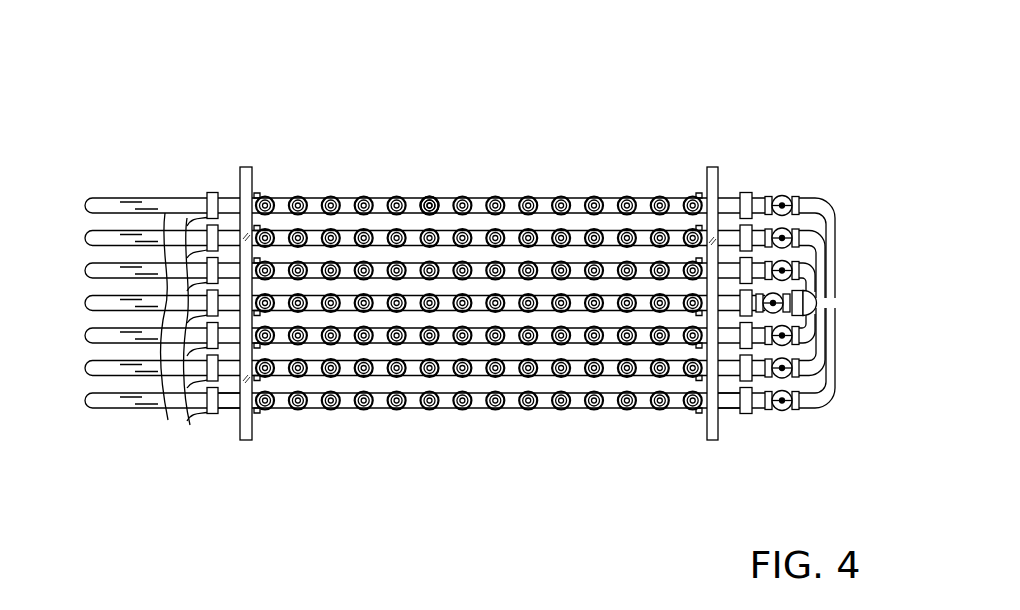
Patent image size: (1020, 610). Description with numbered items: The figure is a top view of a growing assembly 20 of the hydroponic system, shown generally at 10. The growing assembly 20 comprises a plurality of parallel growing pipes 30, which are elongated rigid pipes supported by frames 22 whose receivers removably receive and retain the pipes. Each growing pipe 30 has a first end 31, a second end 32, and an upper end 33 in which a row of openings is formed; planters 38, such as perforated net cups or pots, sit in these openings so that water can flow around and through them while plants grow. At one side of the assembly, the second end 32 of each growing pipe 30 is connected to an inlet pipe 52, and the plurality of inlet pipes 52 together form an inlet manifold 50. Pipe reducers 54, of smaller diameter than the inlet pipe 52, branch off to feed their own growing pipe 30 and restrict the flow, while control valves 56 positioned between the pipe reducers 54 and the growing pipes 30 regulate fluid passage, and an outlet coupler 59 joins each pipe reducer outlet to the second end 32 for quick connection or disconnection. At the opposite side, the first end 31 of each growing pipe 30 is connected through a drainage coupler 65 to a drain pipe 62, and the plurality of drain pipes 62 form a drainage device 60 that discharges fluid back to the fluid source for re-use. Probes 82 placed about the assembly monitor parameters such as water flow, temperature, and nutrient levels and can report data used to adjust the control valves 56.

The battery module 10 is at (472, 278).
The growing assembly 20 is at (435, 341).
The frame 22 is at (246, 167).
The growing pipe 30 is at (478, 413).
The first end 31 is at (228, 412).
The second end 32 is at (730, 412).
The upper end 33 is at (509, 398).
The planter 38 is at (433, 198).
The inlet manifold 50 is at (787, 285).
The inlet pipe 52 is at (824, 303).
The pipe reducer 54 is at (836, 210).
The control valve 56 is at (784, 196).
The outlet coupler 59 is at (740, 298).
The drainage device 60 is at (117, 194).
The drain pipe 62 is at (168, 420).
The drainage coupler 65 is at (205, 192).
The probe 82 is at (259, 192).